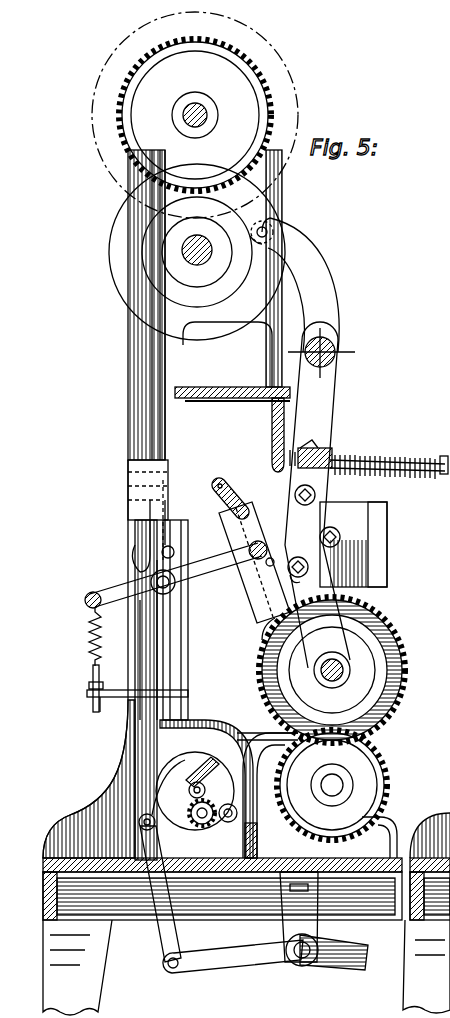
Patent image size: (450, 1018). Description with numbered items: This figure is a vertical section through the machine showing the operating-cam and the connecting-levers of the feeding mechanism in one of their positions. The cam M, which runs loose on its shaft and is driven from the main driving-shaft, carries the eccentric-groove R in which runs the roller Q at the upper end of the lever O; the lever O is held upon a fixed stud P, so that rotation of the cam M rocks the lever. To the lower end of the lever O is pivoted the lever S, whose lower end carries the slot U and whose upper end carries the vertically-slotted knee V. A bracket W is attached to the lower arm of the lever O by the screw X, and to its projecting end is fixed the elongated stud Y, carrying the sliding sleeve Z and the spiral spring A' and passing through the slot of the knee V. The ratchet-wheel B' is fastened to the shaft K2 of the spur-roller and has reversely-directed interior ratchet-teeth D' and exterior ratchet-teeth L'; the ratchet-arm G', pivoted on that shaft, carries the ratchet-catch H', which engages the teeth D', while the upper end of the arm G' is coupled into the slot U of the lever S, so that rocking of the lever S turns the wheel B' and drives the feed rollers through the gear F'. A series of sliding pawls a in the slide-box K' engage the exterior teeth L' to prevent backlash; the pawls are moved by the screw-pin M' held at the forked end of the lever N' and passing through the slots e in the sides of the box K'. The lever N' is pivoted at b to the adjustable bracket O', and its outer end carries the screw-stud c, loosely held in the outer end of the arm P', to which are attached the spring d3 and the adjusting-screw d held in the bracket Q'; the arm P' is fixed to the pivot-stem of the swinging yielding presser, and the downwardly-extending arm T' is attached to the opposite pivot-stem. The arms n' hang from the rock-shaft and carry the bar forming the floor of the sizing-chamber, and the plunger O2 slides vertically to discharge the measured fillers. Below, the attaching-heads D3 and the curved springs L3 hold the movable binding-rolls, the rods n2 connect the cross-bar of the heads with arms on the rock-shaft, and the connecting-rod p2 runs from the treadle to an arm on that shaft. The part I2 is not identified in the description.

The screw X is at (195, 115).
The eccentric-groove R is at (130, 252).
The lever N' is at (186, 249).
The roller Q is at (254, 237).
The cam M is at (278, 220).
The lever O is at (303, 285).
The fixed stud P is at (321, 352).
The lever S is at (317, 495).
The downwardly-extending arm T' is at (318, 493).
The slot U is at (314, 560).
The sliding sleeve Z is at (321, 448).
The bracket W is at (292, 455).
The vertically-slotted knee V is at (306, 446).
The spiral spring A' is at (387, 456).
The elongated stud Y is at (412, 462).
The ratchet-catch H' is at (358, 553).
The ratchet-wheel B' is at (339, 670).
The ratchet-arm G' is at (332, 670).
The exterior ratchet-teeth L' is at (260, 630).
The reversely-directed ratchet-teeth D' is at (346, 670).
The shaft K2 is at (321, 671).
The gear F' is at (332, 785).
The link I2 is at (170, 765).
The attaching-heads D3 is at (165, 778).
The rods n2 is at (140, 822).
The screw-stud c is at (169, 575).
The pivot point b is at (166, 579).
The screw-pin M' is at (249, 544).
The adjustable bracket O' is at (141, 536).
The arm P' is at (136, 660).
The arms n' is at (136, 640).
The spring d3 is at (85, 637).
The adjusting-screw d is at (93, 702).
The bracket Q' is at (109, 708).
The slide-box K' is at (246, 562).
The sliding pawls a is at (230, 497).
The slots e is at (270, 569).
The vertically-sliding plunger O2 is at (233, 956).
The curved springs L3 is at (302, 946).
The connecting-rod p2 is at (345, 940).